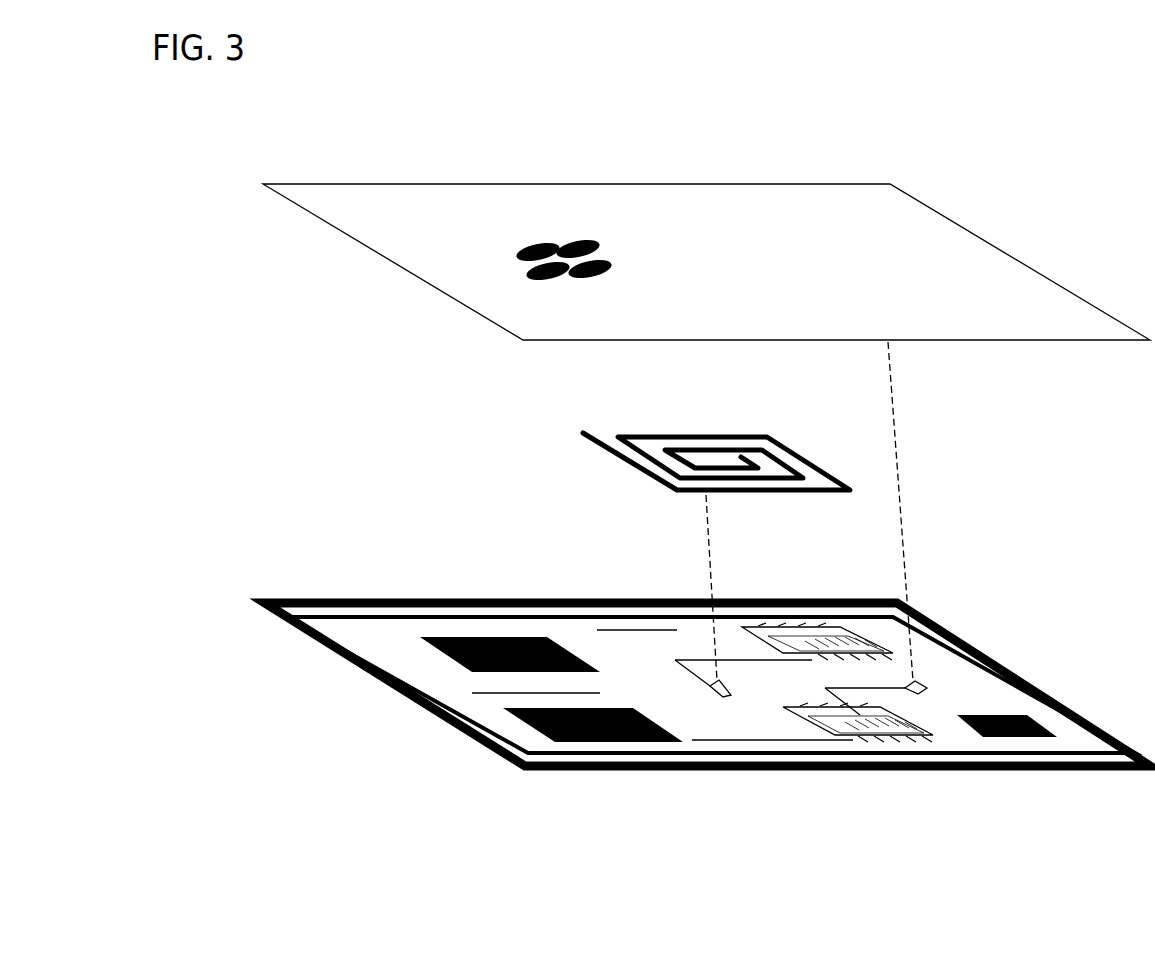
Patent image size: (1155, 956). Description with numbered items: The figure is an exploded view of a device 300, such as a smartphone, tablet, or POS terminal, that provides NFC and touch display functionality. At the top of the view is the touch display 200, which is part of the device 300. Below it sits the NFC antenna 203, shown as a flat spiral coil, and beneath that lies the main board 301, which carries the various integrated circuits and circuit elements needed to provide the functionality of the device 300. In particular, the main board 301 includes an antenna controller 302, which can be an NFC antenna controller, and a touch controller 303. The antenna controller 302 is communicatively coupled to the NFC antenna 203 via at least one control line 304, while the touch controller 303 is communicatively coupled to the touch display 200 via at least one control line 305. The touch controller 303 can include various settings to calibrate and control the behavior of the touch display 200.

The device 300 is at (223, 125).
The touch display 200 is at (417, 223).
The NFC antenna 203 is at (584, 459).
The main board 301 is at (413, 650).
The antenna controller 302 is at (823, 636).
The touch controller 303 is at (858, 715).
The control line 304 is at (743, 596).
The control line 305 is at (891, 528).